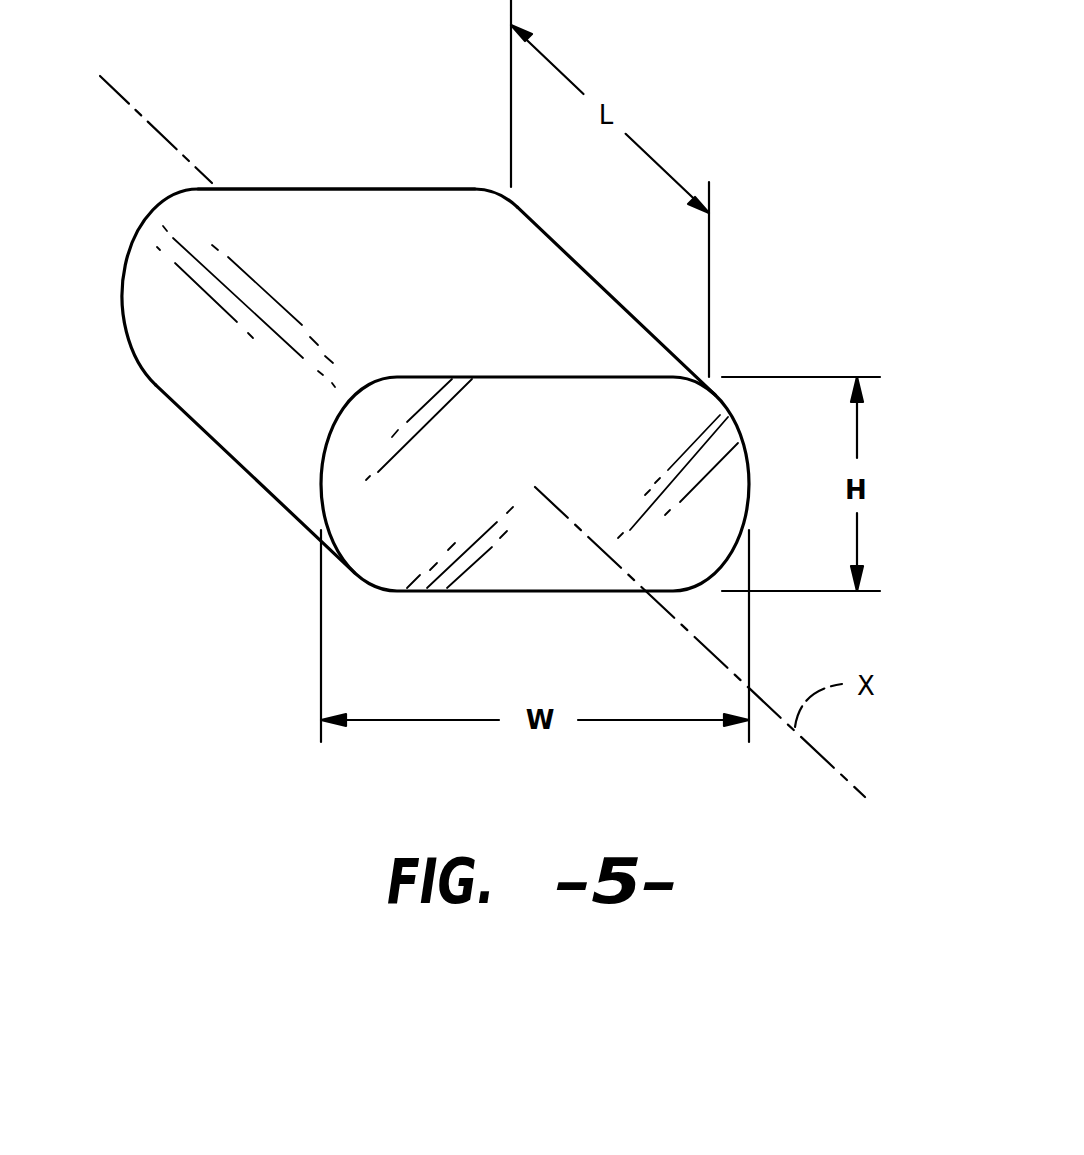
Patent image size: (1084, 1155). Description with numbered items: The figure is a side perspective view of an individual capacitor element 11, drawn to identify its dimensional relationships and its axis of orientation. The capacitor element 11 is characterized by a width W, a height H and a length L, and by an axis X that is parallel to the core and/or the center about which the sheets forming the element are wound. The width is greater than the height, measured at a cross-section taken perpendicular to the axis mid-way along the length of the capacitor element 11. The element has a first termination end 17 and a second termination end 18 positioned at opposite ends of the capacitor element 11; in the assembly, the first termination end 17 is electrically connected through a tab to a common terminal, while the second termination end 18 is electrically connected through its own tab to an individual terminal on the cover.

The capacitor element 11 is at (233, 402).
The first termination end 17 is at (672, 413).
The second termination end 18 is at (393, 188).